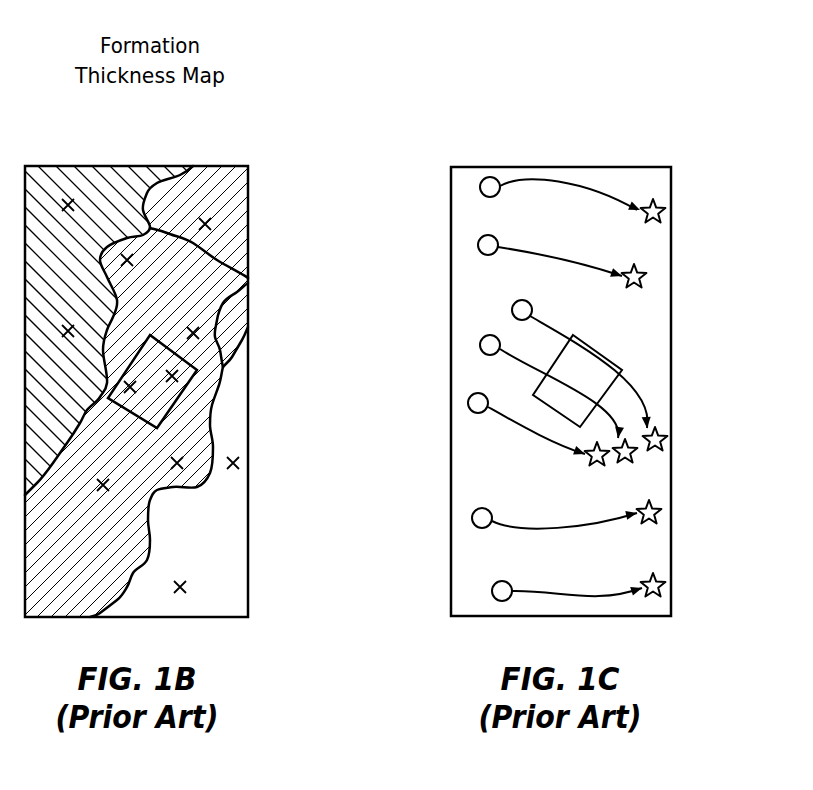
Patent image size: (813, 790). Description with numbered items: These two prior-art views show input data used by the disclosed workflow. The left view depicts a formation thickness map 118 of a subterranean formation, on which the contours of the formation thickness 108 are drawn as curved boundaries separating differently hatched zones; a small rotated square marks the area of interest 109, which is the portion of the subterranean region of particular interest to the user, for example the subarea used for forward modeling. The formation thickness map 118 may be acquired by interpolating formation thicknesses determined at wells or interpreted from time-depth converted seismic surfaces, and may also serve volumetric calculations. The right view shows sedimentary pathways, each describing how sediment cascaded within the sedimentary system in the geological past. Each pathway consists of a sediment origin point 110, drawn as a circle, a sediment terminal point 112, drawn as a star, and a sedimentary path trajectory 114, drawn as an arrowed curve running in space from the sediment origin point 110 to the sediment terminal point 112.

In FIG. 1B, the formation thickness map 118 is at (138, 166).
In FIG. 1B, the formation thickness contours 108 is at (248, 279).
In FIG. 1B, the area of interest (AOI) 109 is at (177, 398).
In FIG. 1C, the sediment origin point 110 is at (478, 244).
In FIG. 1C, the sediment terminal point 112 is at (647, 265).
In FIG. 1C, the sedimentary path trajectory 114 is at (637, 397).